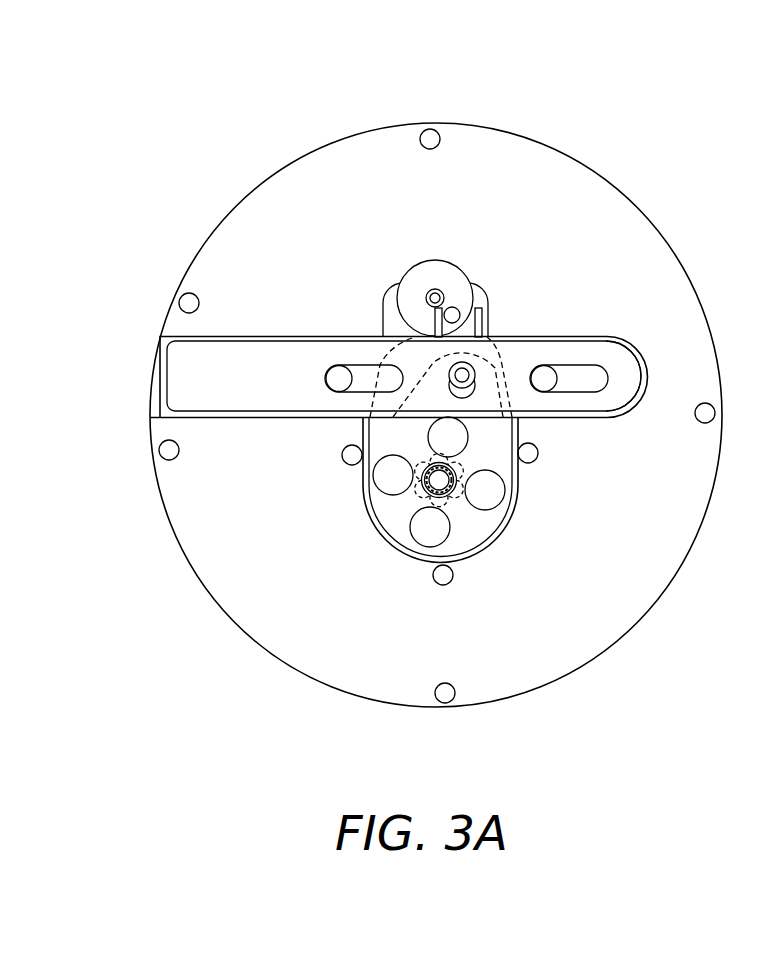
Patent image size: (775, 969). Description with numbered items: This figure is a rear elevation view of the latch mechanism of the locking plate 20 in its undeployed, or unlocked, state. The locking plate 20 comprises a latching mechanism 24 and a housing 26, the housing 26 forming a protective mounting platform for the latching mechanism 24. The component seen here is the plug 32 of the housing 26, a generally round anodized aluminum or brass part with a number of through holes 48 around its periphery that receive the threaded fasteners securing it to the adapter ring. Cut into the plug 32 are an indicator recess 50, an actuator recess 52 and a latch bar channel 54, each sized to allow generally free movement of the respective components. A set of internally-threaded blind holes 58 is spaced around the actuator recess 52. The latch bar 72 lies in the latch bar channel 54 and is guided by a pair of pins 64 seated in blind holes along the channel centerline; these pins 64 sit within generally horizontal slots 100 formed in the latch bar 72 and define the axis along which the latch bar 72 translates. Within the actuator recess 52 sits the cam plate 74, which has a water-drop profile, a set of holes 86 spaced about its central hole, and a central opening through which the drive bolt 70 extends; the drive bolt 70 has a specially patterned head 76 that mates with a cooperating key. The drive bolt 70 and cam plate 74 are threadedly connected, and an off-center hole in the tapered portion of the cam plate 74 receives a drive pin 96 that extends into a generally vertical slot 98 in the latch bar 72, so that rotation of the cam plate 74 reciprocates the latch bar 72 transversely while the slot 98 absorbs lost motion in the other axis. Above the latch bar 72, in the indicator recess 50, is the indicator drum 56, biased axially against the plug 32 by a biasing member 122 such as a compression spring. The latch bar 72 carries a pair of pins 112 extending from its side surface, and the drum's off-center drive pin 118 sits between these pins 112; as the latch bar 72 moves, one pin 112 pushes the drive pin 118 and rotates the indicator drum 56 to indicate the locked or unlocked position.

The locking plate 20 is at (313, 122).
The latching mechanism 24 is at (379, 641).
The housing 26 is at (274, 208).
The plug 32 is at (508, 122).
The through holes 48 is at (430, 139).
The indicator recess 50 is at (393, 300).
The actuator recess 52 is at (478, 562).
The latch bar channel 54 is at (639, 371).
The indicator drum 56 is at (489, 281).
The internally-threaded blind holes 58 is at (352, 458).
The pins 64 is at (330, 400).
The drive bolt 70 is at (415, 496).
The latch bar 72 is at (642, 347).
The cam plate 74 is at (403, 522).
The specially patterned head 76 is at (478, 521).
The holes 86 is at (513, 509).
The drive pin 96 is at (482, 391).
The vertical slot 98 is at (466, 364).
The horizontal slots 100 is at (360, 365).
The pins 112 is at (421, 324).
The drive pin 118 is at (455, 316).
The biasing member 122 is at (433, 273).